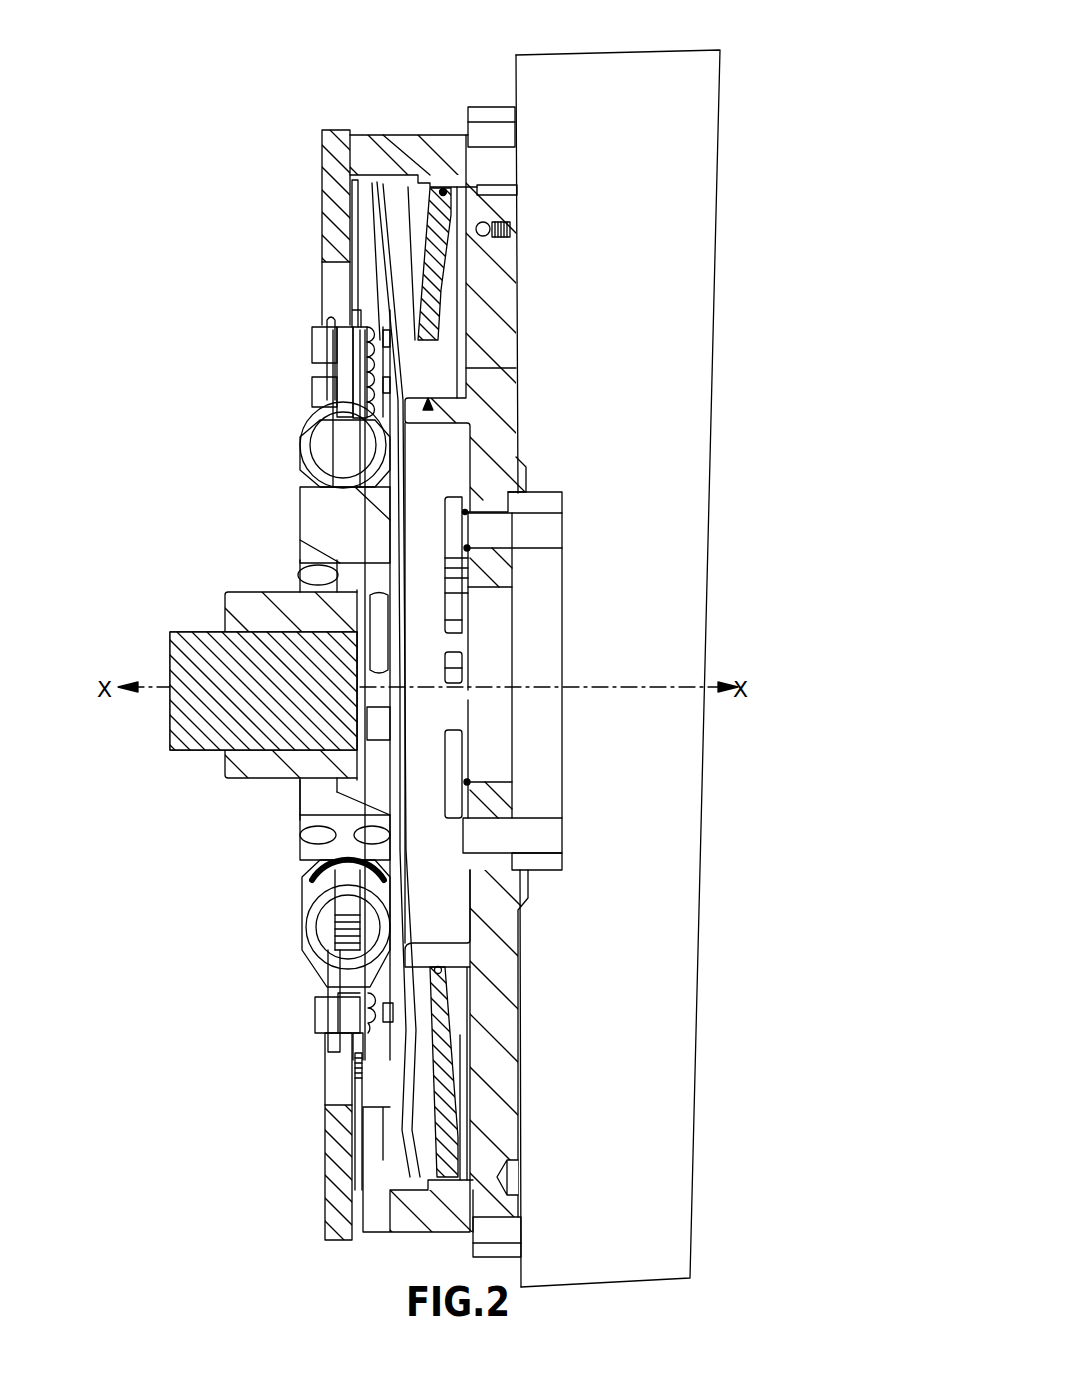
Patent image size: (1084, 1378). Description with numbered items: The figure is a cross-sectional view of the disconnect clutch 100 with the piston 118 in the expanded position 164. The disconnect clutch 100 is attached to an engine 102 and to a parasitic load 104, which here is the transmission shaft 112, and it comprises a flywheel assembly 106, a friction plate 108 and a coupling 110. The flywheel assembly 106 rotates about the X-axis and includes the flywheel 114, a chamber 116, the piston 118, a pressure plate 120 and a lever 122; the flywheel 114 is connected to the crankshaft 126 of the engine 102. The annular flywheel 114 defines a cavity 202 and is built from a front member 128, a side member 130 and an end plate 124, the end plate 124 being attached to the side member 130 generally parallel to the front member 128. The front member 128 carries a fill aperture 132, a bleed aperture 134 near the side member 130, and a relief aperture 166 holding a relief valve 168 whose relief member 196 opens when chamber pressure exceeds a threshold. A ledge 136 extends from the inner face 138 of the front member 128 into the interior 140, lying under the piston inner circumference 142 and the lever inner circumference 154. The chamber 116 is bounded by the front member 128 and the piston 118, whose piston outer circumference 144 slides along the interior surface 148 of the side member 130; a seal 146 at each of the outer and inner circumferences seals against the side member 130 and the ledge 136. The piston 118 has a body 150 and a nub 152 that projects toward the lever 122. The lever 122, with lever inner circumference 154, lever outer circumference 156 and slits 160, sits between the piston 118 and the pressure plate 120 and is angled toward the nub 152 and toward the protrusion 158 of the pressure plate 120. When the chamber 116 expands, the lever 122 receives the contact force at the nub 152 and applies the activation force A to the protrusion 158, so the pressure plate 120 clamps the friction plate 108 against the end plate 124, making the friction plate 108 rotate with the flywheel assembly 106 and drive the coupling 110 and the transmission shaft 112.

The disconnect clutch 100 is at (300, 160).
The engine 102 is at (700, 97).
The parasitic load 104 is at (240, 605).
The flywheel assembly 106 is at (335, 120).
The friction plate 108 is at (360, 257).
The coupling 110 is at (345, 395).
The transmission shaft 112 is at (198, 753).
The flywheel 114 is at (505, 328).
The chamber 116 is at (470, 385).
The piston 118 is at (470, 282).
The pressure plate 120 is at (372, 183).
The lever 122 is at (395, 278).
The end plate 124 is at (335, 160).
The crankshaft 126 is at (530, 590).
The front member 128 is at (495, 350).
The side member 130 is at (432, 165).
The fill aperture 132 is at (470, 368).
The bleed aperture 134 is at (500, 188).
The ledge 136 is at (492, 458).
The inner face 138 is at (470, 300).
The interior 140 is at (385, 183).
The piston inner circumference 142 is at (435, 405).
The piston outer circumference 144 is at (460, 185).
The seal 146 is at (446, 190).
The interior surface 148 is at (408, 183).
The body 150 is at (458, 275).
The nub 152 is at (398, 343).
The lever inner circumference 154 is at (420, 402).
The lever outer circumference 156 is at (440, 145).
The protrusion 158 is at (362, 235).
The slits 160 is at (356, 368).
The expanded position 164 is at (455, 250).
The relief aperture 166 is at (492, 226).
The relief valve 168 is at (508, 230).
The relief member 196 is at (485, 215).
The cavity 202 is at (345, 195).
The activation force A is at (482, 192).